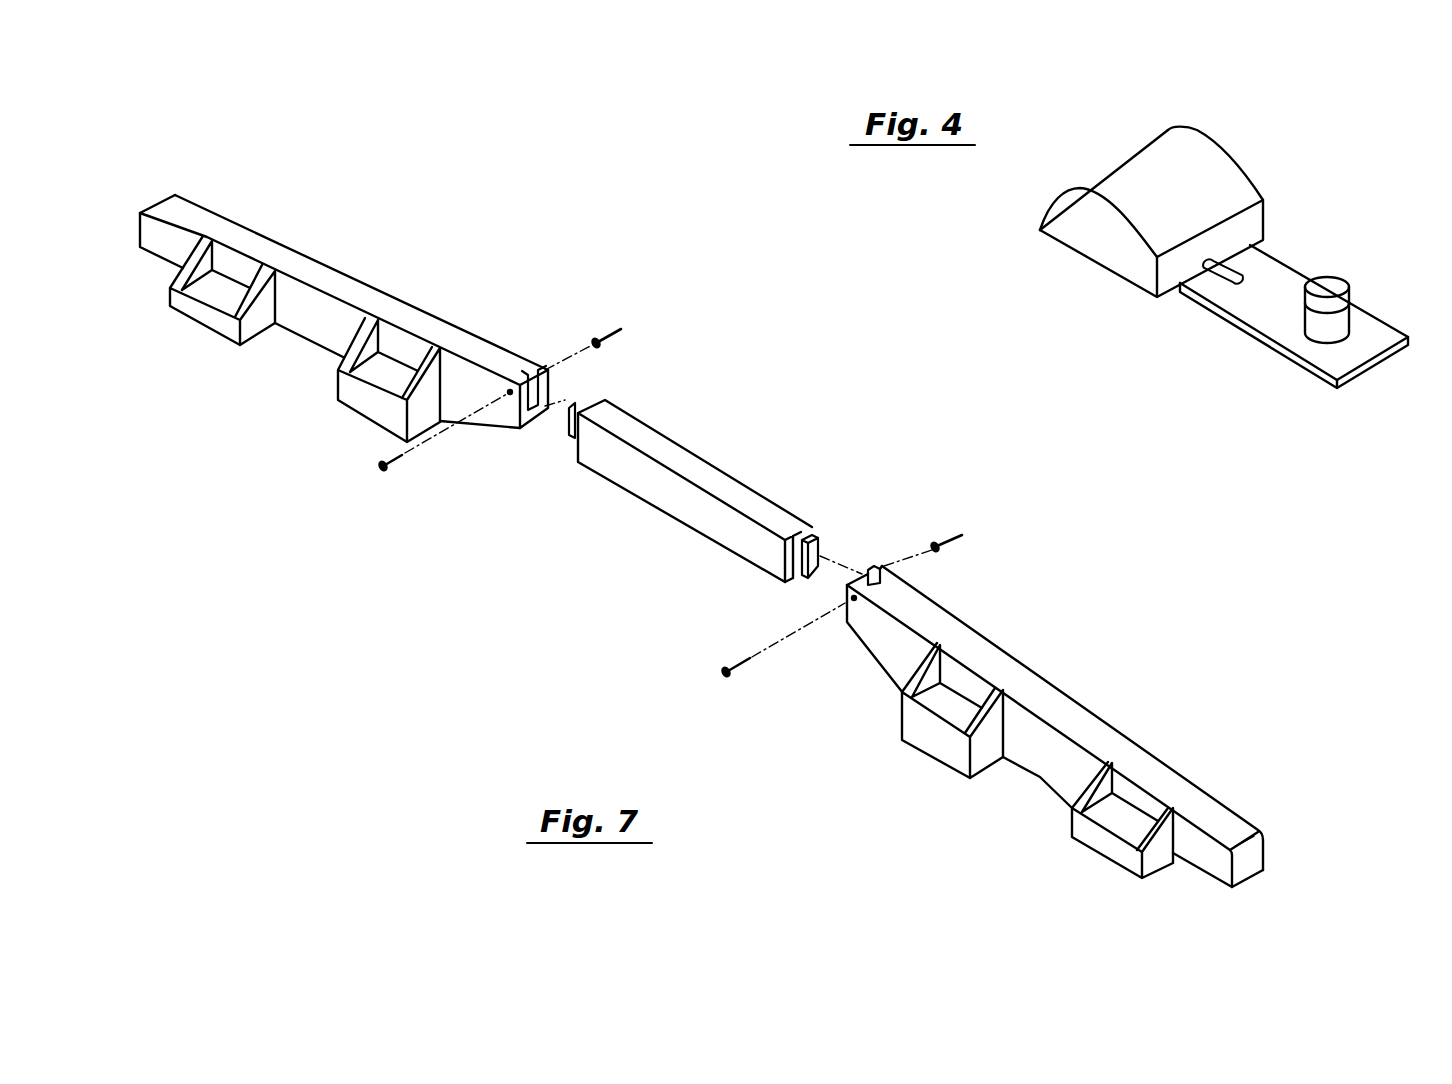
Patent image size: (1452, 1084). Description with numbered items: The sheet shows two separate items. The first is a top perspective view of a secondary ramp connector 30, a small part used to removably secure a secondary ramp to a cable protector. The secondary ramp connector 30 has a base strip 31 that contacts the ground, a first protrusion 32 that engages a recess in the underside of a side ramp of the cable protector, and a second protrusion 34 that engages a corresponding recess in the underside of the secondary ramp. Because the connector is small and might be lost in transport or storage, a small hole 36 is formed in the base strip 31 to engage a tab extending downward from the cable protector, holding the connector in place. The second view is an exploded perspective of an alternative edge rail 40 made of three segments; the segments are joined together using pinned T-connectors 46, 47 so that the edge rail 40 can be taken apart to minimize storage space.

In FIG. 4, the secondary ramp connector 30 is at (1300, 155).
In FIG. 4, the base strip 31 is at (1247, 337).
In FIG. 4, the first protrusion 32 is at (1177, 160).
In FIG. 4, the second protrusion 34 is at (1330, 287).
In FIG. 4, the hole 36 is at (1230, 270).
In FIG. 7, the edge rail 40 is at (555, 645).
In FIG. 7, the pinned T-connector 46 is at (592, 403).
In FIG. 7, the pinned T-connector 47 is at (534, 366).